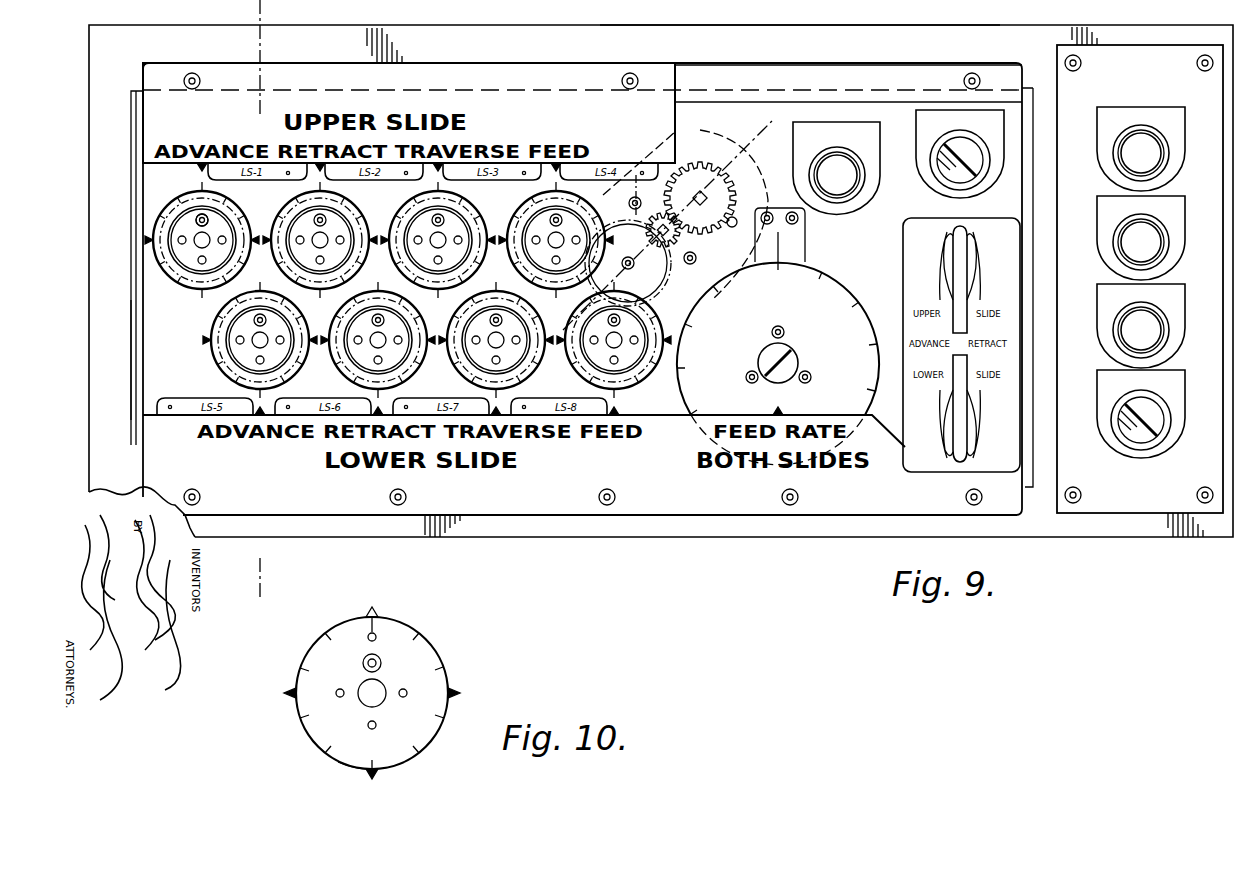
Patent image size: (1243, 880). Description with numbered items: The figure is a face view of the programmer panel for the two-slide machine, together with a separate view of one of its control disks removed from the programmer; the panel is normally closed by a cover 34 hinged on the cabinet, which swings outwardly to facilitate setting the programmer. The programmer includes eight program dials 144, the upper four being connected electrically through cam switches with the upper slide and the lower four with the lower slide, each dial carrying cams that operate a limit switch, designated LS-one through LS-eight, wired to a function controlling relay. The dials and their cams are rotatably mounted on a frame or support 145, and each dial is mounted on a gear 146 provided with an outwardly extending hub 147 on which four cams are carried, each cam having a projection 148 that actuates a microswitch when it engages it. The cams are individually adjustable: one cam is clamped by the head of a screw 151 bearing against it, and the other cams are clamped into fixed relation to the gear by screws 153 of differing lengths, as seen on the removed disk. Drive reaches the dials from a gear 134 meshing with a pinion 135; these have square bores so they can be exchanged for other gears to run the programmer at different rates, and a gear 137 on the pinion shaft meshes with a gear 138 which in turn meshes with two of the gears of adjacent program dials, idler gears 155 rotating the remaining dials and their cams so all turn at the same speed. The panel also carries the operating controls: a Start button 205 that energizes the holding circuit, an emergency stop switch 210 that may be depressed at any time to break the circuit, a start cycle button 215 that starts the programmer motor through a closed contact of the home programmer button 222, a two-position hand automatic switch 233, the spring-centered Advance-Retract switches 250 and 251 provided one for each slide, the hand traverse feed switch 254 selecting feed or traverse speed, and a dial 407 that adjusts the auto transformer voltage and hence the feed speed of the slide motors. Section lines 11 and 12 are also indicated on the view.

In FIG. 9, the section line 11- 11 is at (305, 13).
In FIG. 9, the section line 12- 12 is at (787, 148).
In FIG. 9, the cover for the programmer 34 is at (774, 40).
In FIG. 9, the gear 134 is at (722, 162).
In FIG. 9, the pinion 135 is at (684, 239).
In FIG. 9, the gear 137 is at (642, 190).
In FIG. 9, the gear 138 is at (618, 220).
In FIG. 9, the program dial 144 is at (158, 268).
In FIG. 10, the program dial 144 is at (432, 640).
In FIG. 9, the frame or support 145 is at (160, 181).
In FIG. 9, the gear 146 is at (175, 213).
In FIG. 9, the hub 147 is at (326, 236).
In FIG. 10, the hub 147 is at (360, 703).
In FIG. 9, the cam projection 148 is at (152, 244).
In FIG. 10, the cam projection 148 is at (370, 610).
In FIG. 10, the screw 151 is at (340, 762).
In FIG. 9, the screw 153 is at (207, 222).
In FIG. 10, the screw 153 is at (406, 688).
In FIG. 9, the idler gear 155 is at (215, 300).
In FIG. 9, the Start button 205 is at (1160, 332).
In FIG. 9, the emergency stop switch 210 is at (1156, 166).
In FIG. 9, the start cycle button 215 is at (1155, 242).
In FIG. 9, the home programmer button 222 is at (838, 205).
In FIG. 9, the hand automatic switch 233 is at (1138, 442).
In FIG. 9, the Advance-Retract switch 250 is at (945, 258).
In FIG. 9, the Advance-Retract switch 251 is at (942, 438).
In FIG. 9, the hand traverse feed switch 254 is at (946, 182).
In FIG. 9, the dial 407 is at (818, 312).